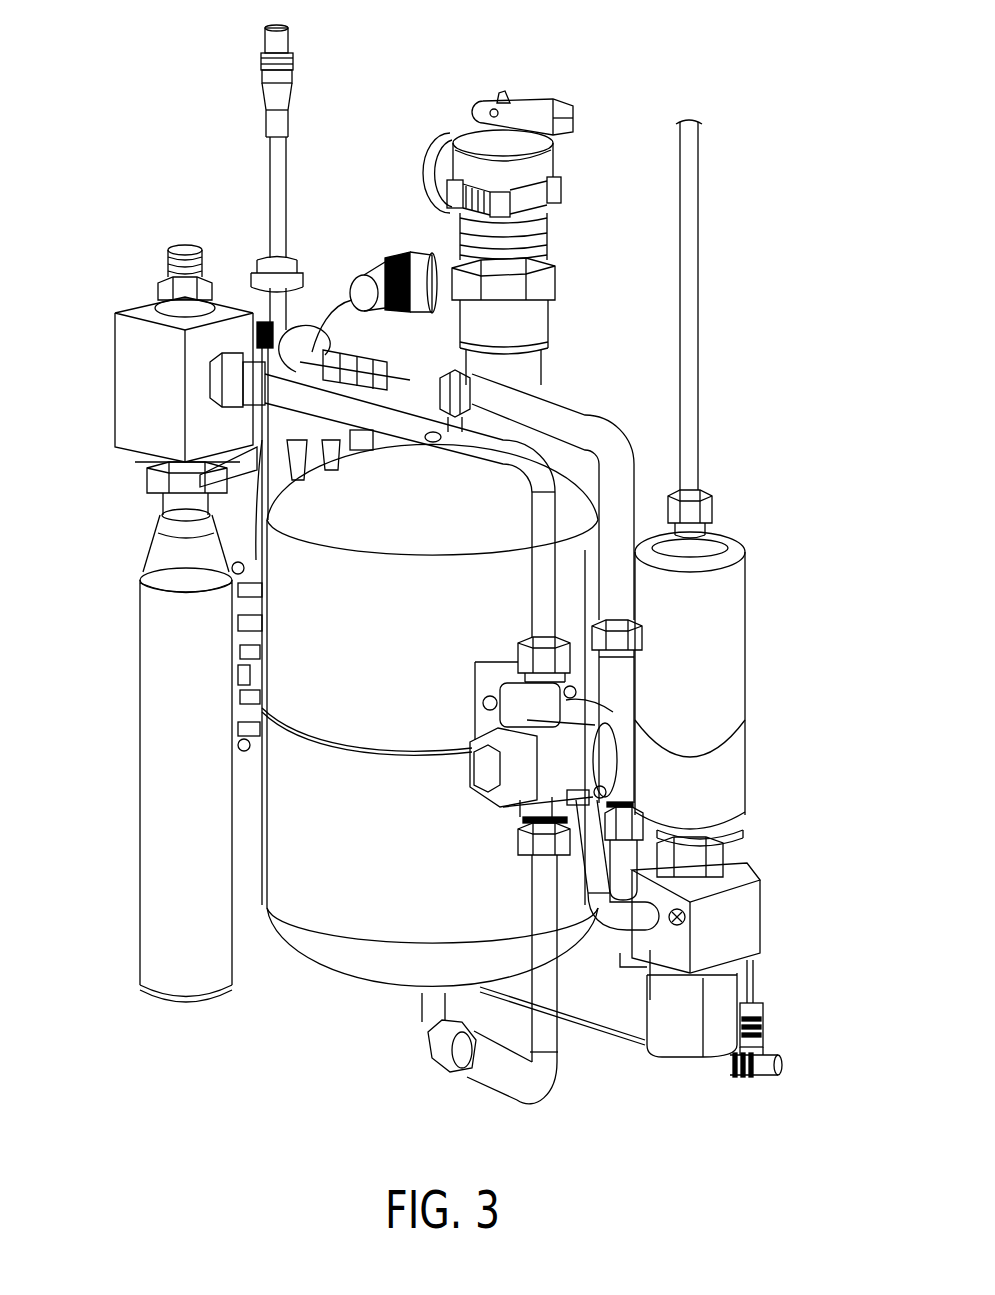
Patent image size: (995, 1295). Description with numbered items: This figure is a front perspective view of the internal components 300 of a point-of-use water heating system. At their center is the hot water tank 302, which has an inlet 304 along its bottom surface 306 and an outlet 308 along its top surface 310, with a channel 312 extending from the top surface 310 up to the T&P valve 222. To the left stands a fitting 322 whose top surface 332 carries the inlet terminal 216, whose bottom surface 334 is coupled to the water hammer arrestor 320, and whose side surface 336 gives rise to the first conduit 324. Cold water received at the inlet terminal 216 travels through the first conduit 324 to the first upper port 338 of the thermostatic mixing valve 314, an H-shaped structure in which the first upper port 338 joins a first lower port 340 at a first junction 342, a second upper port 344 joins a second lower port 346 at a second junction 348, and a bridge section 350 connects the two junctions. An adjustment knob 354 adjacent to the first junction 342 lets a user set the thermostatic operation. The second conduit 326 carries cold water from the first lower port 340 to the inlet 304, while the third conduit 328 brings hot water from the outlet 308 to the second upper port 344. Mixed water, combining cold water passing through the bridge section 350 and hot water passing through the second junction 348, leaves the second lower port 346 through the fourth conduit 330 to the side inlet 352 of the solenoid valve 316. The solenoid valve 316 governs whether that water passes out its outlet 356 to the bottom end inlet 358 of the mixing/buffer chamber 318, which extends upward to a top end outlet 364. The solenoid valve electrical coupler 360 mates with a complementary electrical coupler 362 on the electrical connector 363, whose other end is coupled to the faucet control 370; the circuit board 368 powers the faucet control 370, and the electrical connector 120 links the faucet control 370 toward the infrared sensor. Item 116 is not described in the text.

The internal components 300 is at (172, 72).
The electrical connector 120 is at (274, 173).
The inlet terminal 216 is at (185, 248).
The top surface 332 is at (241, 290).
The T&P valve 222 is at (572, 190).
The level sensor rod 116 is at (700, 258).
The channel 312 is at (552, 345).
The third conduit 328 is at (620, 412).
The side surface 336 is at (200, 347).
The fitting 322 is at (122, 455).
The bottom surface 334 is at (140, 467).
The outlet 308 is at (430, 450).
The top surface 310 is at (454, 516).
The faucet control 370 is at (252, 473).
The top end outlet 364 is at (727, 497).
The mixing/buffer chamber 318 is at (752, 632).
The second upper port 344 is at (590, 612).
The first conduit 324 is at (528, 605).
The first upper port 338 is at (516, 641).
The first junction 342 is at (490, 683).
The thermostatic mixing valve 314 is at (468, 732).
The second junction 348 is at (648, 718).
The circuit board 368 is at (248, 752).
The adjustment knob 354 is at (468, 792).
The hot water tank 302 is at (382, 866).
The first lower port 340 is at (515, 837).
The second lower port 346 is at (653, 833).
The bottom end inlet 358 is at (742, 847).
The outlet 356 is at (742, 857).
The bridge section 350 is at (692, 906).
The second conduit 326 is at (540, 895).
The solenoid valve 316 is at (772, 935).
The bottom surface 306 is at (340, 988).
The inlet 304 is at (410, 1000).
The water hammer arrestor 320 is at (190, 1020).
The fourth conduit 330 is at (604, 916).
The solenoid valve electrical coupler 360 is at (793, 1025).
The side inlet 352 is at (637, 945).
The electrical connector 363 is at (641, 940).
The complementary electrical coupler 362 is at (762, 1075).